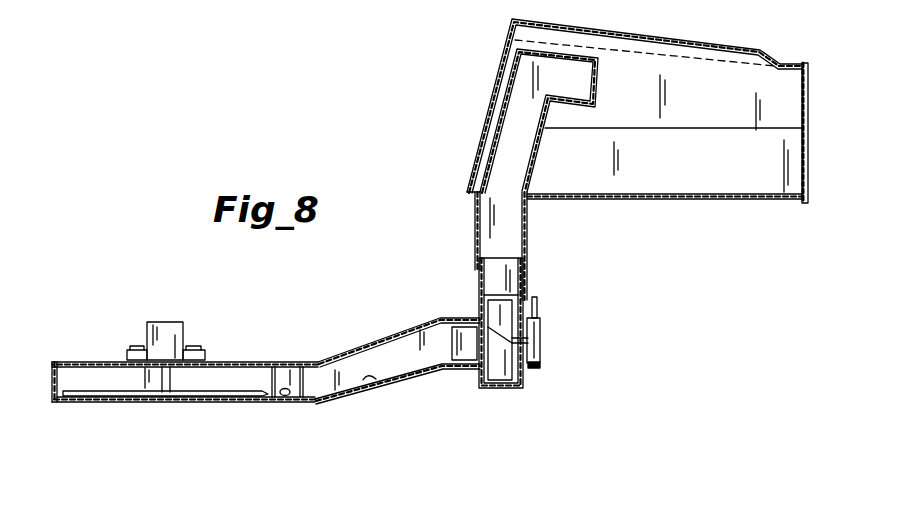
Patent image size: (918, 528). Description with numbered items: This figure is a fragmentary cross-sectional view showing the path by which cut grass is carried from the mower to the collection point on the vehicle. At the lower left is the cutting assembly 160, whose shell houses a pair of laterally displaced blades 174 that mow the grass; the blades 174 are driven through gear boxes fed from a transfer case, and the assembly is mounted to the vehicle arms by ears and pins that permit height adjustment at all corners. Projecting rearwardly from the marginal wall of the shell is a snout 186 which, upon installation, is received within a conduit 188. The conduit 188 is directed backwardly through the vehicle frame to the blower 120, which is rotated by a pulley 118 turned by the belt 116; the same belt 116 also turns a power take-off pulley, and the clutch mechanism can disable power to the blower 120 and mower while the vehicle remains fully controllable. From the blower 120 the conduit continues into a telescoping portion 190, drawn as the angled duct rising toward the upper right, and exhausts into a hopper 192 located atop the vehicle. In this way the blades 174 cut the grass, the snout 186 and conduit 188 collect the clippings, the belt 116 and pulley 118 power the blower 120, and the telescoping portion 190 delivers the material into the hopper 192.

The cutting assembly 160 is at (90, 356).
The blades 174 is at (180, 398).
The snout 186 is at (285, 395).
The conduit 188 is at (371, 378).
The telescoping portion 190 is at (528, 238).
The hopper 192 is at (683, 83).
The blower 120 is at (507, 376).
The pulley 118 is at (538, 350).
The belt 116 is at (535, 369).